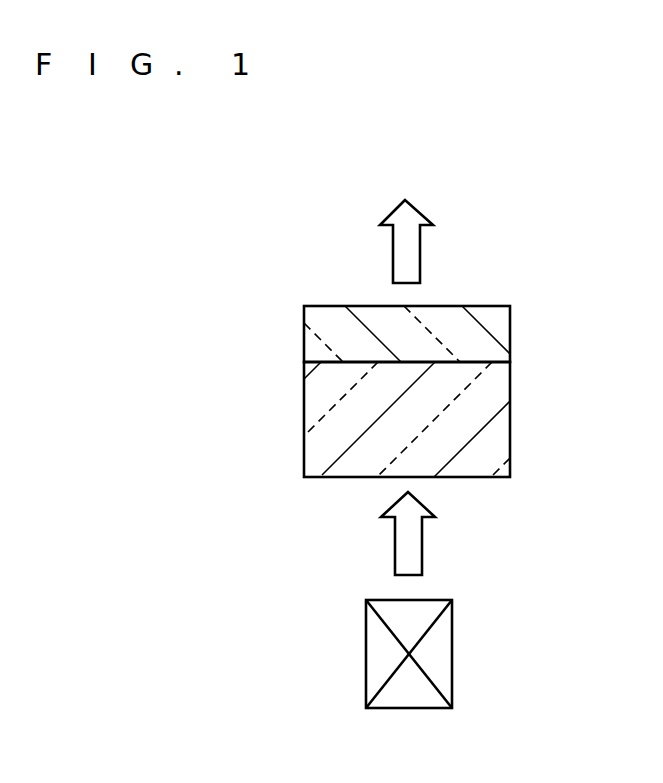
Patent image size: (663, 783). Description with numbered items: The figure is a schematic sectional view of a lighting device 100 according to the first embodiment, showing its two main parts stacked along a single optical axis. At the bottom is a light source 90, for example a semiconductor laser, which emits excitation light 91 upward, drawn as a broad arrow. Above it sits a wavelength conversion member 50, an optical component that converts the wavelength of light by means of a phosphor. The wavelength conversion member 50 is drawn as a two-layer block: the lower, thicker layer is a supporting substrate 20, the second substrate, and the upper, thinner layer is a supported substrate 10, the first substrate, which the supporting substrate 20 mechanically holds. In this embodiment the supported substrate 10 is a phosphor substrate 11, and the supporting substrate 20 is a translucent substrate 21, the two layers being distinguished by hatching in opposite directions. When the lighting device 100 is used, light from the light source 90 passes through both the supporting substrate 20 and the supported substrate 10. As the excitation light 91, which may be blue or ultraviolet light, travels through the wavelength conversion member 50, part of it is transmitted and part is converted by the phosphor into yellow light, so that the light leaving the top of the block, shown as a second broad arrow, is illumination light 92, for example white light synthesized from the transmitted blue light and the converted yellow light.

The lighting device 100 is at (290, 173).
The wavelength conversion member 50 is at (271, 301).
The supported substrate 10 is at (518, 307).
The phosphor substrate 11 is at (315, 330).
The supporting substrate 20 is at (518, 365).
The translucent substrate 21 is at (315, 420).
The light source 90 is at (276, 620).
The excitation light 91 is at (422, 547).
The illumination light 92 is at (420, 253).